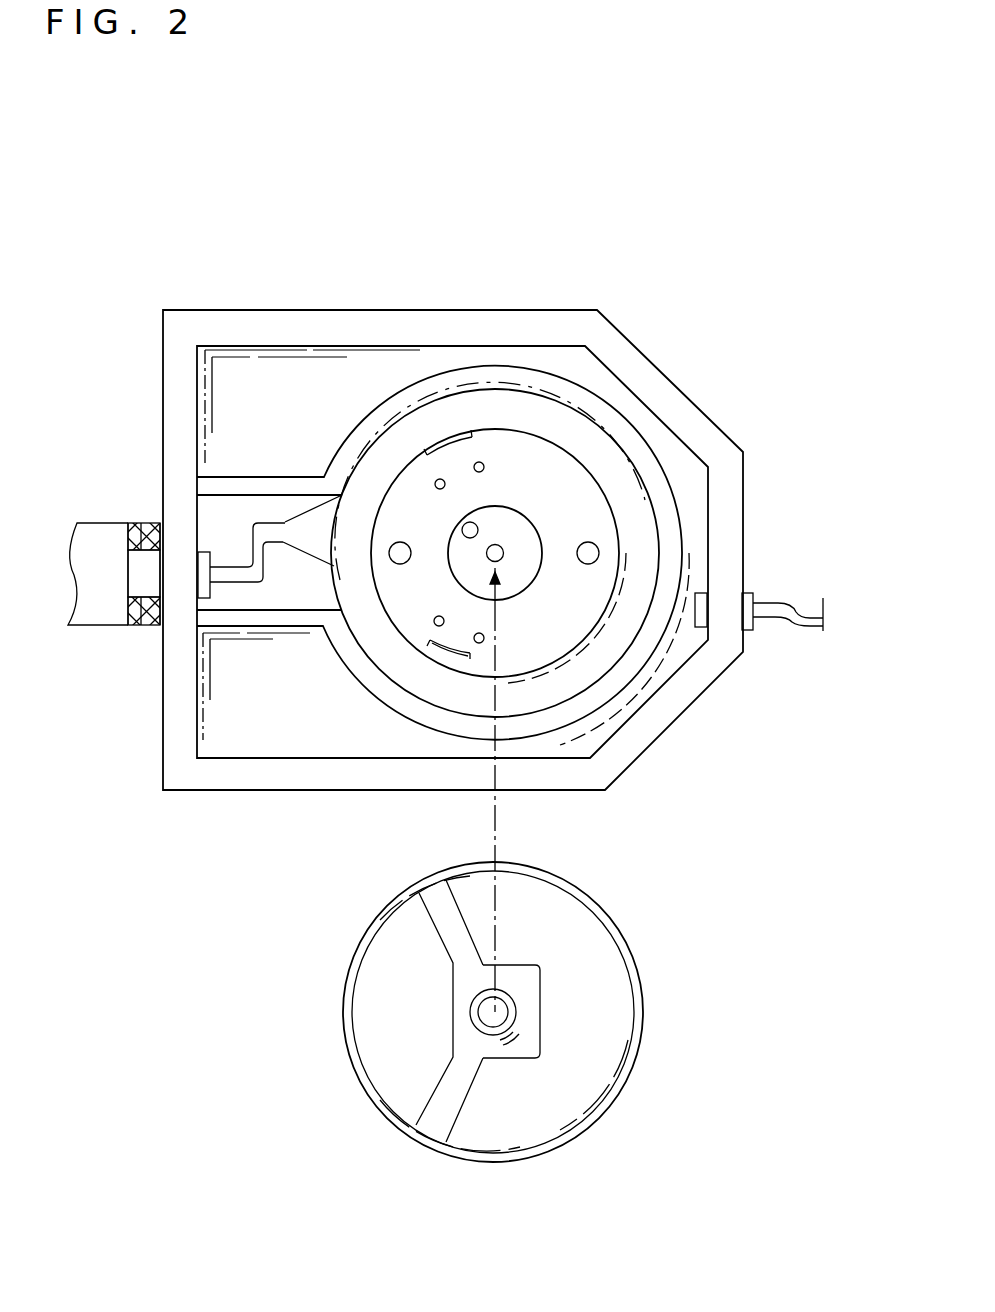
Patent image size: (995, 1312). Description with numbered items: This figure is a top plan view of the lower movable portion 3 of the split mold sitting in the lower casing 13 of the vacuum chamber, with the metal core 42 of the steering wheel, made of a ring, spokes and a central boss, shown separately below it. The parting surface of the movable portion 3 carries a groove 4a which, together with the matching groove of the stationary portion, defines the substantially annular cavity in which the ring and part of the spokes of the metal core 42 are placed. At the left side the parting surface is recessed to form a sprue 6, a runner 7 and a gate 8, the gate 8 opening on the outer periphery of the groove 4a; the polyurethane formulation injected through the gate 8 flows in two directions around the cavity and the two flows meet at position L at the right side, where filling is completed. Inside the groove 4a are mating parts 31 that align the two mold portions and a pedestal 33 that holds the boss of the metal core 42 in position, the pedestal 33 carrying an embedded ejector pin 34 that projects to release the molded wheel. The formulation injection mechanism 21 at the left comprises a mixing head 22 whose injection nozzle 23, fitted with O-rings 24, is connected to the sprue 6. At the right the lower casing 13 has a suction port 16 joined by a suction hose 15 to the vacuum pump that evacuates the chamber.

The lower movable portion 3 is at (494, 378).
The lower casing 13 is at (545, 326).
The groove 4a is at (594, 437).
The gate 8 is at (313, 520).
The runner 7 is at (266, 569).
The sprue 6 is at (222, 569).
The injection nozzle 23 is at (199, 552).
The formulation injection mechanism 21 is at (82, 512).
The O-rings 24 is at (131, 628).
The mixing head 22 is at (80, 620).
The mating parts 31 is at (587, 549).
The pedestal 33 is at (526, 575).
The ejector pin 34 is at (465, 528).
The position L is at (628, 535).
The suction hose 15 is at (789, 611).
The suction port 16 is at (701, 627).
The metal core 42 is at (612, 931).